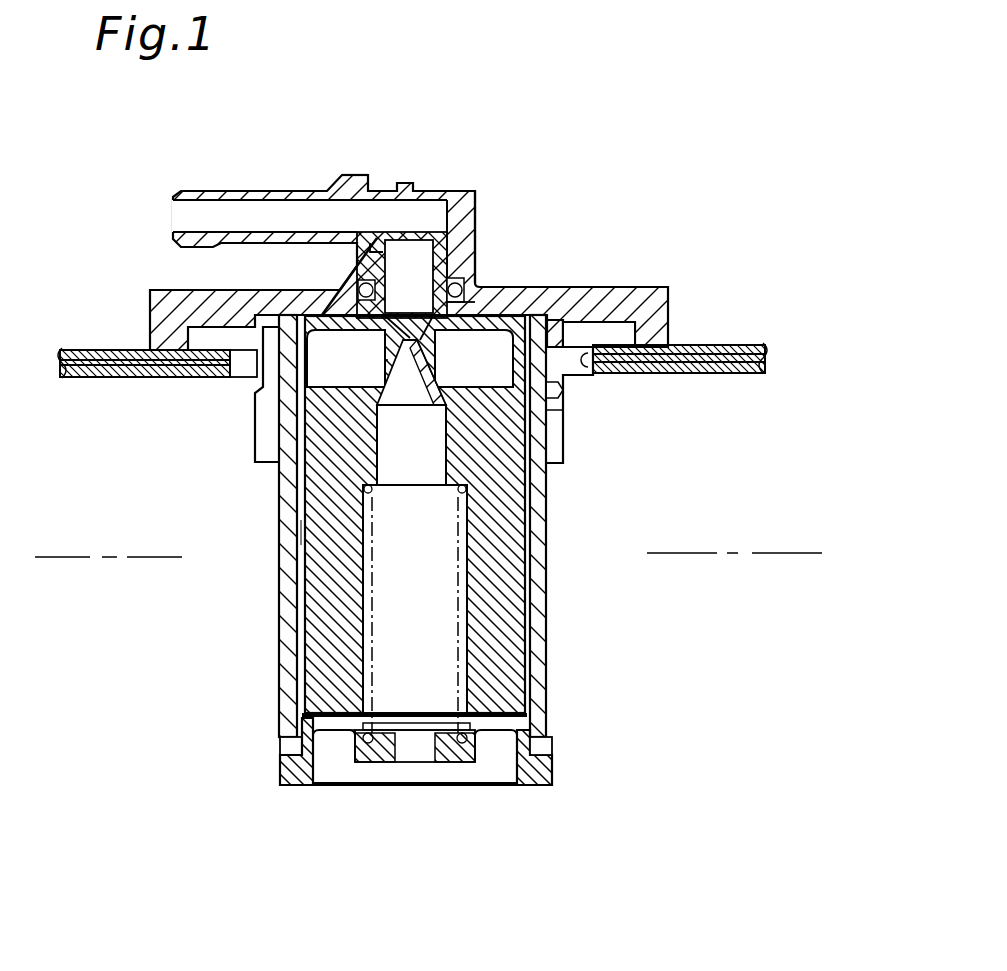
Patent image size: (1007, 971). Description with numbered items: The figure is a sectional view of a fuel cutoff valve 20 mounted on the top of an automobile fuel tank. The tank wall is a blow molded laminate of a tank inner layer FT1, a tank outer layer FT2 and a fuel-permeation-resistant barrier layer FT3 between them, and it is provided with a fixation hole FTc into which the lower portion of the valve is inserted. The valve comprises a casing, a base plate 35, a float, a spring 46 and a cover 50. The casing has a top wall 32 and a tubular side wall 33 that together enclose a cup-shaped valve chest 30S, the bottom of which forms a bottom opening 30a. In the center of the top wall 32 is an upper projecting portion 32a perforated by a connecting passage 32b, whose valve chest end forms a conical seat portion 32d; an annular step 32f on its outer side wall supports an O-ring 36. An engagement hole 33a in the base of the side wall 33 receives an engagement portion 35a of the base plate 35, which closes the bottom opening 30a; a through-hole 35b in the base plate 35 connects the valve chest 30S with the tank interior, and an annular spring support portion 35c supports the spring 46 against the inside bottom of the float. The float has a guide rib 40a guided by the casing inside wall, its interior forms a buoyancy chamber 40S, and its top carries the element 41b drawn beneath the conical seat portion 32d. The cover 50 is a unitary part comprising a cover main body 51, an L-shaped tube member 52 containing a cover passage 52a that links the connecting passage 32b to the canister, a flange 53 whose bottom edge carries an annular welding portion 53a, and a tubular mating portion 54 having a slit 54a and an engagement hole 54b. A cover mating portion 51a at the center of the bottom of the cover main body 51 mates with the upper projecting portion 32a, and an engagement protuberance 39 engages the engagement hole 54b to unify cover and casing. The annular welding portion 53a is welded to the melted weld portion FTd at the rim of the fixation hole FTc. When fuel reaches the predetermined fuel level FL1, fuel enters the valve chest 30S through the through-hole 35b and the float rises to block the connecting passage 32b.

The fuel cutoff valve 20 is at (667, 189).
The cover 50 is at (482, 175).
The cover main body 51 is at (517, 303).
The cover mating portion 51a is at (445, 270).
The tube member 52 is at (295, 197).
The cover passage 52a is at (230, 214).
The flange 53 is at (597, 305).
The annular welding portion 53a is at (655, 340).
The mating portion 54 is at (560, 425).
The slit 54a is at (270, 423).
The engagement hole 54b is at (556, 392).
The engagement protuberance 39 is at (555, 410).
The O-ring 36 is at (463, 283).
The top wall 32 is at (258, 374).
The upper projecting portion 32a is at (344, 258).
The connecting passage 32b is at (370, 263).
The conical seat portion 32d is at (507, 357).
The annular step 32f is at (470, 292).
The side wall 33 is at (279, 540).
The engagement hole 33a is at (280, 742).
The valve chest 30S is at (303, 530).
The bottom opening 30a is at (552, 744).
The base plate 35 is at (523, 782).
The engagement portion 35a is at (280, 748).
The through-hole 35b is at (410, 755).
The spring support portion 35c is at (358, 740).
The guide rib 40a is at (303, 642).
The buoyancy chamber 40S is at (420, 658).
The valve plug 41b is at (417, 370).
The spring 46 is at (468, 598).
The predetermined fuel level FL1 is at (752, 553).
The tank inner layer FT1 is at (762, 368).
The tank outer layer FT2 is at (758, 352).
The barrier layer FT3 is at (760, 360).
The fixation hole FTc is at (673, 343).
The weld portion FTd is at (725, 344).